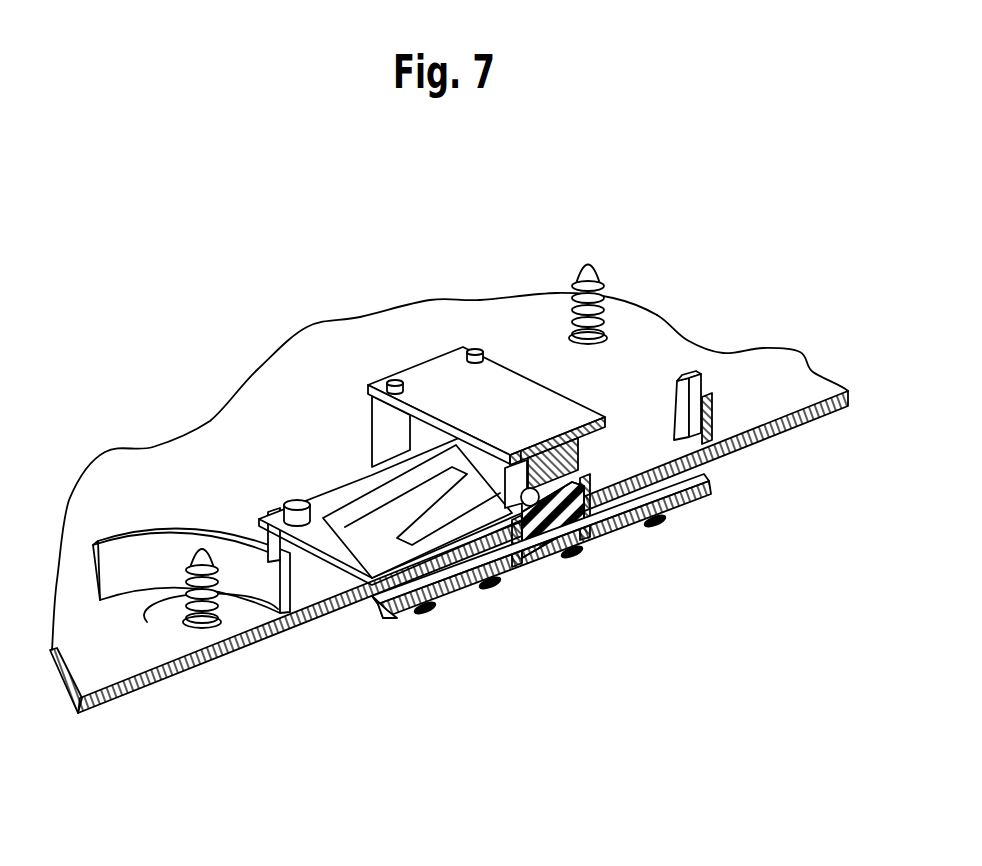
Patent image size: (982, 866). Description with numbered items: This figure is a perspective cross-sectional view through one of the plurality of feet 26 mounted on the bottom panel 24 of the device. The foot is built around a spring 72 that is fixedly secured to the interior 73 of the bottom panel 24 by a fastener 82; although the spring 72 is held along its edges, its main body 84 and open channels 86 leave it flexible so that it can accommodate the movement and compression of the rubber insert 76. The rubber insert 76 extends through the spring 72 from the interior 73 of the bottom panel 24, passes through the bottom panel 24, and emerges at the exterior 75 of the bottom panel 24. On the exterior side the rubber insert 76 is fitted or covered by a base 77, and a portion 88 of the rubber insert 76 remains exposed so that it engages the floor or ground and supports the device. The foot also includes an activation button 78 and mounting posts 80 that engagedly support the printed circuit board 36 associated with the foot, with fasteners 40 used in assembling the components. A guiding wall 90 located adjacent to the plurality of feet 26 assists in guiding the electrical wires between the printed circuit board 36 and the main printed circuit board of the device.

The bottom panel 24 is at (760, 437).
The plurality of feet 26 is at (332, 417).
The printed circuit board 36 is at (499, 366).
The fasteners 40 is at (148, 624).
The spring 72 is at (342, 556).
The interior 73 is at (780, 363).
The exterior 75 is at (821, 427).
The rubber insert 76 is at (558, 557).
The base 77 is at (378, 612).
The activation button 78 is at (578, 445).
The mounting posts 80 is at (475, 348).
The fastener 82 is at (295, 500).
The main body 84 is at (362, 470).
The open channels 86 is at (488, 586).
The portion 88 is at (687, 502).
The guiding wall 90 is at (123, 547).